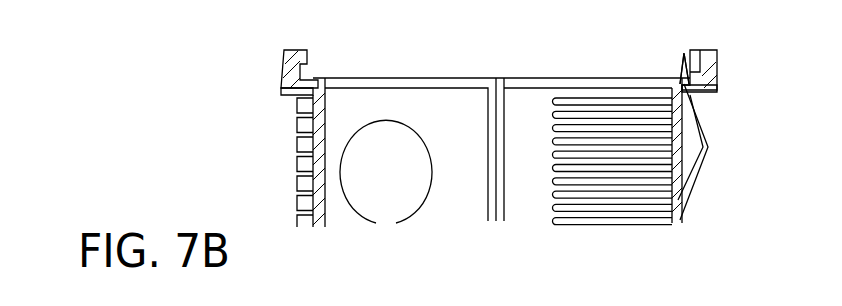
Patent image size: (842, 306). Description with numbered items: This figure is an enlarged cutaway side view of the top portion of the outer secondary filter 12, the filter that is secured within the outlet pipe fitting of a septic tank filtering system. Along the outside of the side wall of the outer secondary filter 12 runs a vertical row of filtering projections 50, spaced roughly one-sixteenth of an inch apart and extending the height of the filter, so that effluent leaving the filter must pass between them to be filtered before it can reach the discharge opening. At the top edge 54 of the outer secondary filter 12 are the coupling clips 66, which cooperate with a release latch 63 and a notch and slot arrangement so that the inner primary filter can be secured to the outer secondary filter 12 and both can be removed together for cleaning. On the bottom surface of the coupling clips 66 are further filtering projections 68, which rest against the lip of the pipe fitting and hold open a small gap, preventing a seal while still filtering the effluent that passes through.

The outer secondary filter 12 is at (216, 204).
The filtering projections 50 is at (297, 148).
The top edge 54 is at (318, 77).
The release latch 63 is at (678, 66).
The coupling clips 66 is at (303, 52).
The filtering projections 68 is at (282, 92).